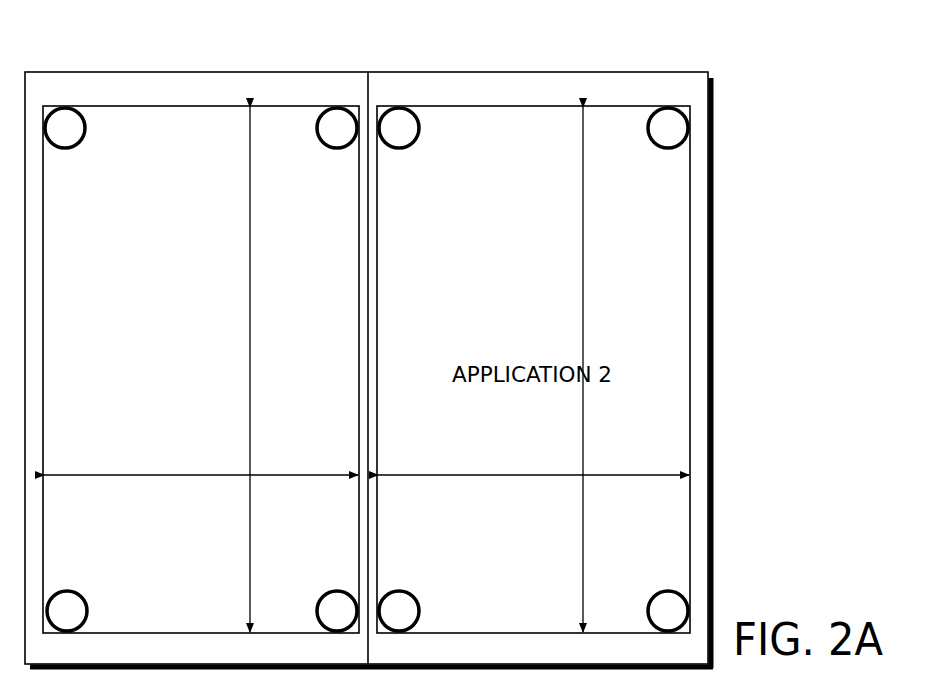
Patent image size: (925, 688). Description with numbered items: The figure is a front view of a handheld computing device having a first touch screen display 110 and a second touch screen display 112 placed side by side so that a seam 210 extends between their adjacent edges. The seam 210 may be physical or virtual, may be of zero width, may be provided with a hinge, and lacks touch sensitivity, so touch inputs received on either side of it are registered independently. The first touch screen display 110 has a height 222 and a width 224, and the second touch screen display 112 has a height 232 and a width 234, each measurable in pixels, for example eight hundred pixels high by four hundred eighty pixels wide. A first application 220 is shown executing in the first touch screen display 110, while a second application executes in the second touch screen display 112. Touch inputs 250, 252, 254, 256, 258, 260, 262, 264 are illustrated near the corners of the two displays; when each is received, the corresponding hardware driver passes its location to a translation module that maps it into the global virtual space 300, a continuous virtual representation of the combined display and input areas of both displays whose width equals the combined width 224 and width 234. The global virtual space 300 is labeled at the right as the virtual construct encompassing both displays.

The first touch screen display 110 is at (147, 130).
The second touch screen display 112 is at (505, 133).
The seam 210 is at (370, 100).
The application 1 220 is at (200, 307).
The height 222 is at (250, 298).
The width 224 is at (143, 478).
The height 232 is at (585, 275).
The width 234 is at (482, 478).
The touch input 250 is at (75, 138).
The touch input 252 is at (326, 145).
The touch input 254 is at (399, 142).
The touch input 256 is at (678, 150).
The touch input 258 is at (72, 601).
The touch input 260 is at (326, 601).
The touch input 262 is at (412, 601).
The touch input 264 is at (682, 596).
The global virtual space 300 is at (754, 237).